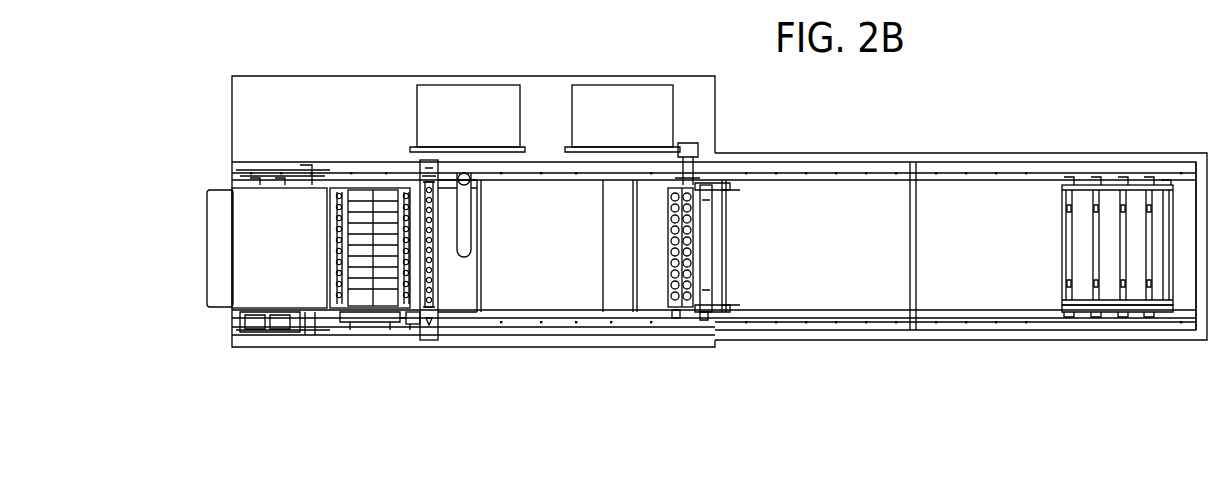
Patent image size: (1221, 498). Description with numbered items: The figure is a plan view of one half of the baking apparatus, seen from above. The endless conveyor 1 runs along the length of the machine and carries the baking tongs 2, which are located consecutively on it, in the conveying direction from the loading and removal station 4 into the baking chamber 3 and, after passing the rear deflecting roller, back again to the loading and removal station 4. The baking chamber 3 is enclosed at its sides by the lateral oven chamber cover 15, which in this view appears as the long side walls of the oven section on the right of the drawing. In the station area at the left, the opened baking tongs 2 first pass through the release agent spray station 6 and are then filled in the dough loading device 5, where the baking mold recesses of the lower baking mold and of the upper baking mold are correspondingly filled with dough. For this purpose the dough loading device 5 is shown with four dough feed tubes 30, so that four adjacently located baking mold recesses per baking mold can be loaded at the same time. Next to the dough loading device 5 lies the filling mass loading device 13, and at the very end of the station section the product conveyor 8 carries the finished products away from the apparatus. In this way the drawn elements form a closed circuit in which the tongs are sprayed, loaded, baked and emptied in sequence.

The endless conveyor 1 is at (1110, 167).
The baking tongs 2 is at (685, 303).
The baking chamber 3 is at (880, 193).
The loading and removal station 4 is at (407, 163).
The dough loading device 5 is at (447, 108).
The release agent spray station 6 is at (415, 320).
The product conveyor 8 is at (263, 282).
The filling mass loading device 13 is at (615, 117).
The lateral oven chamber cover 15 is at (1020, 153).
The dough feed tubes 30 is at (464, 303).